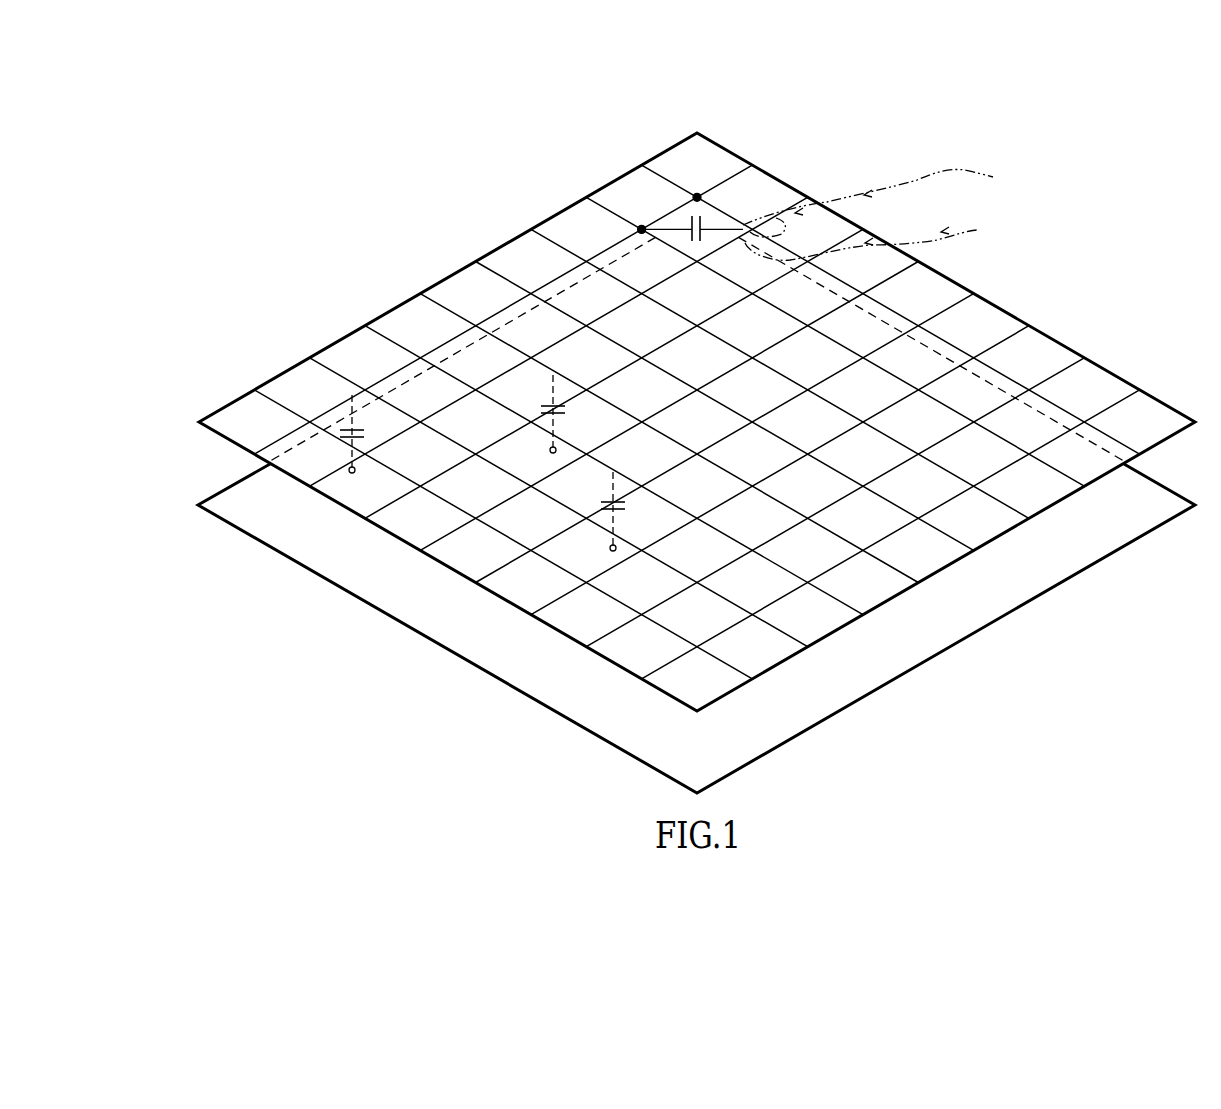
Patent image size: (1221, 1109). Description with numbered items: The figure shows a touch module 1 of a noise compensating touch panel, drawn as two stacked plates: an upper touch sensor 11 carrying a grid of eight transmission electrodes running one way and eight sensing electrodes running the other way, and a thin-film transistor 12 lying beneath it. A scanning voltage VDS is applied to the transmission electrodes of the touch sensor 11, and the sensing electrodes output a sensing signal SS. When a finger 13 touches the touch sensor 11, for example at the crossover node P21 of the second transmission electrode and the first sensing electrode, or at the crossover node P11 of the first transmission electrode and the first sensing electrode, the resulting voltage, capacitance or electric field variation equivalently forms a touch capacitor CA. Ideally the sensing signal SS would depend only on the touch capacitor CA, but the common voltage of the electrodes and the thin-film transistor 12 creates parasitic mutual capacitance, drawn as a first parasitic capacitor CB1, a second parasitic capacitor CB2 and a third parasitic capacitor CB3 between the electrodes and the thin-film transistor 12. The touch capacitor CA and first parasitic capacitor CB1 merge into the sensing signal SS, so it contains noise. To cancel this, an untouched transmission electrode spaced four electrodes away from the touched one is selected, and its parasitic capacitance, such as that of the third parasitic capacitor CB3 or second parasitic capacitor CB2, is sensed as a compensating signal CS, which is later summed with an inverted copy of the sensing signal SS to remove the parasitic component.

The touch module 1 is at (1141, 182).
The touch sensor 11 is at (1165, 402).
The thin-film transistor 12 is at (1103, 560).
The finger 13 is at (915, 178).
The crossover node P11 is at (697, 196).
The crossover node P21 is at (641, 229).
The touch capacitor CA is at (705, 217).
The first parasitic capacitor CB1 is at (364, 433).
The second parasitic capacitor CB2 is at (588, 416).
The third parasitic capacitor CB3 is at (648, 512).
The sensing signal SS is at (220, 475).
The compensating signal CS is at (955, 603).
The scanning voltage VDS is at (629, 161).